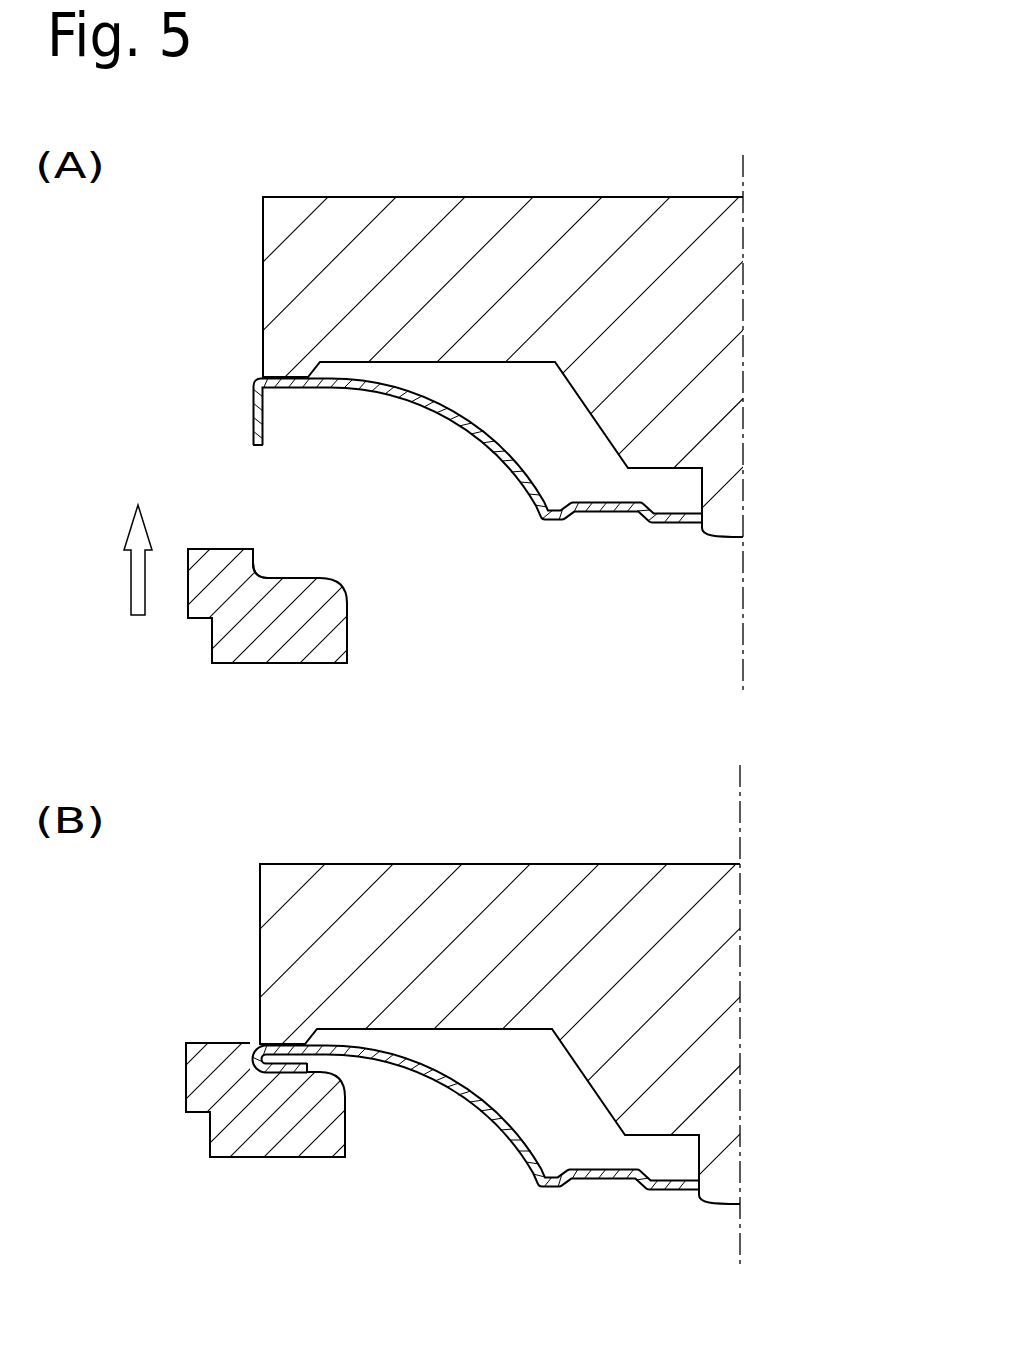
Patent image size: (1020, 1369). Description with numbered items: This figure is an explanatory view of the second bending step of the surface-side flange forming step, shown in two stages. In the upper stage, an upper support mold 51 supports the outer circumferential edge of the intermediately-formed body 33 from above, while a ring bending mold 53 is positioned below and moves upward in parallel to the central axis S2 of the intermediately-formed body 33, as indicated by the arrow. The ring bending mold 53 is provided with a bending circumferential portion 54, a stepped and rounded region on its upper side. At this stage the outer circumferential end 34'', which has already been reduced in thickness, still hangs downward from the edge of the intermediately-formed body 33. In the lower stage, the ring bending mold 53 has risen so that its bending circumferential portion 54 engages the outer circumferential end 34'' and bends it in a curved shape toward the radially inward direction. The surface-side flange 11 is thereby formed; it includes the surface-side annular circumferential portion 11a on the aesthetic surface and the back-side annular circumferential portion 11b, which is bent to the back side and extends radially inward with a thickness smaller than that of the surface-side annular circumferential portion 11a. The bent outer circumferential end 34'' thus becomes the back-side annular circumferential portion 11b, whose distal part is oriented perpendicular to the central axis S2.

The upper support mold 51 is at (298, 266).
The ring bending mold 53 is at (210, 565).
The bending circumferential portion 54 is at (255, 580).
The intermediately-formed body 33 is at (448, 422).
The outer circumferential end 34'' is at (307, 462).
The surface-side flange 11 is at (245, 1020).
The surface-side annular circumferential portion 11a is at (291, 1046).
The back-side annular circumferential portion 11b is at (270, 1073).
The central axis S2 is at (742, 575).